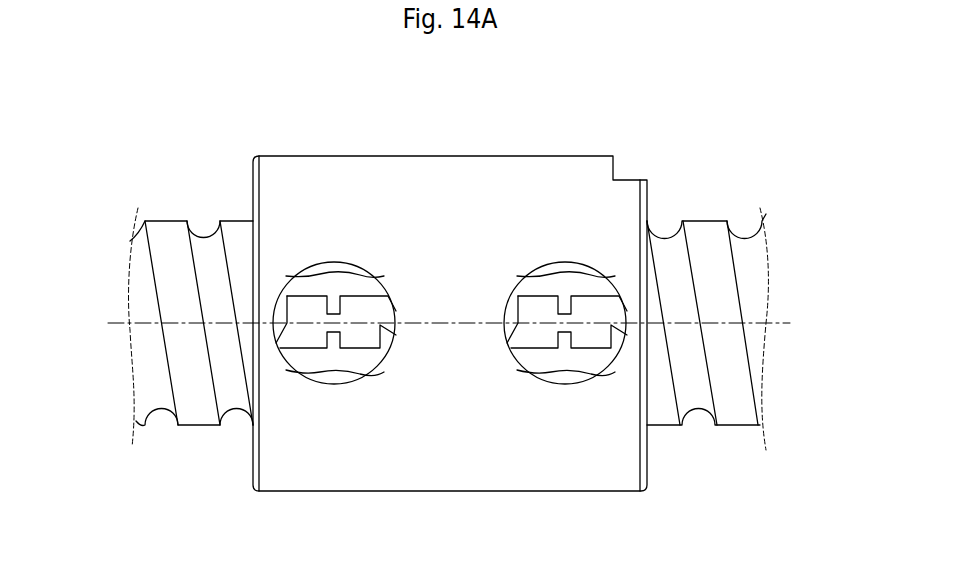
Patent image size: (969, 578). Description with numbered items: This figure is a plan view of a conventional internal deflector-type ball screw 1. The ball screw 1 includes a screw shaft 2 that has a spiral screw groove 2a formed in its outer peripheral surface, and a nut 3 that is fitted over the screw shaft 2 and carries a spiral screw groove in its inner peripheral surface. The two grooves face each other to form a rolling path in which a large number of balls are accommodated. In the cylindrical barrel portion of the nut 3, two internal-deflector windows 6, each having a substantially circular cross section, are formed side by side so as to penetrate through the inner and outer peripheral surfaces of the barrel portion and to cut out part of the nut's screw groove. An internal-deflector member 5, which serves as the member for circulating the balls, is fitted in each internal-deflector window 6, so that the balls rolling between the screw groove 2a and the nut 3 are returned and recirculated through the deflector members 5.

The ball screw 1 is at (311, 130).
The screw shaft 2 is at (702, 221).
The spiral screw groove 2a is at (704, 417).
The nut 3 is at (522, 157).
The internal-deflector member 5 is at (332, 358).
The internal-deflector window 6 is at (288, 292).